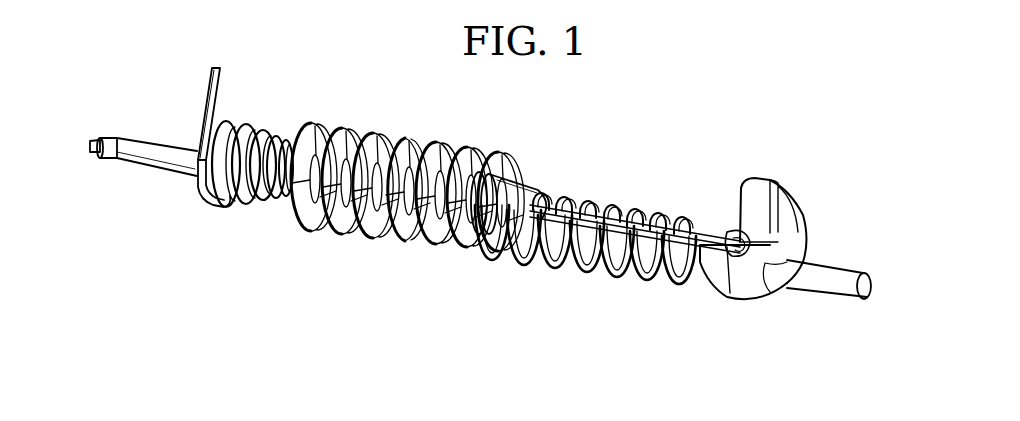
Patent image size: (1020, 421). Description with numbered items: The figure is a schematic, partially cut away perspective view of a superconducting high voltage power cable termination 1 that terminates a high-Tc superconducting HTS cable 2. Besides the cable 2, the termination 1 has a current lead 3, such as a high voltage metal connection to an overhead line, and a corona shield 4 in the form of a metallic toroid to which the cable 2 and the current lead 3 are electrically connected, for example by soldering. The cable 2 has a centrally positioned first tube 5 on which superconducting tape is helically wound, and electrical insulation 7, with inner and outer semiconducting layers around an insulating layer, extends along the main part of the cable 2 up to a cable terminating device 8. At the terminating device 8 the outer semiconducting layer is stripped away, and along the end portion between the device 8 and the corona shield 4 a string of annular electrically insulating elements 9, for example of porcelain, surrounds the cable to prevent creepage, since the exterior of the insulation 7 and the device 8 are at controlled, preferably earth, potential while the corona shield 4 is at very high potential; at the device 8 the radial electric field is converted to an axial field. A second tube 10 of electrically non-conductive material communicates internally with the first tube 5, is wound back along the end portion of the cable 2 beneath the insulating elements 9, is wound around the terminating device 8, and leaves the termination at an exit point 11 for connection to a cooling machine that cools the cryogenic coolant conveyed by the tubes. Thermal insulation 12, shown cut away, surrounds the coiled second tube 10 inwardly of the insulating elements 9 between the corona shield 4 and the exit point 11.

The power cable termination 1 is at (653, 128).
The HTS cable 2 is at (146, 184).
The current lead 3 is at (823, 312).
The corona shield 4 is at (755, 290).
The first tube 5 is at (96, 136).
The electrical insulation 7 is at (157, 144).
The cable terminating device 8 is at (272, 198).
The annular electrically insulating elements 9 is at (394, 234).
The second tube 10 is at (673, 214).
The exit point 11 is at (233, 110).
The thermal insulation 12 is at (517, 190).